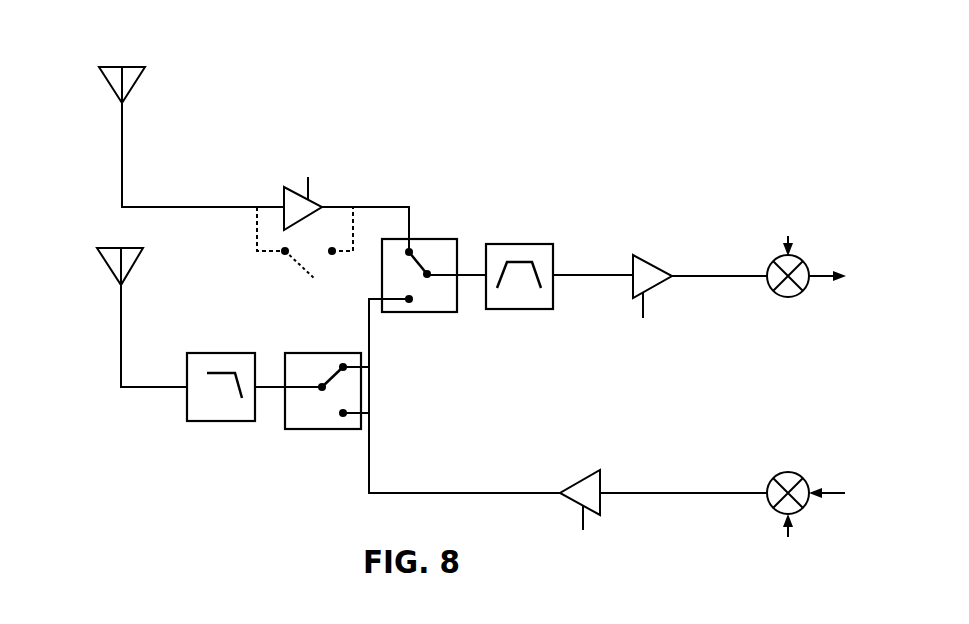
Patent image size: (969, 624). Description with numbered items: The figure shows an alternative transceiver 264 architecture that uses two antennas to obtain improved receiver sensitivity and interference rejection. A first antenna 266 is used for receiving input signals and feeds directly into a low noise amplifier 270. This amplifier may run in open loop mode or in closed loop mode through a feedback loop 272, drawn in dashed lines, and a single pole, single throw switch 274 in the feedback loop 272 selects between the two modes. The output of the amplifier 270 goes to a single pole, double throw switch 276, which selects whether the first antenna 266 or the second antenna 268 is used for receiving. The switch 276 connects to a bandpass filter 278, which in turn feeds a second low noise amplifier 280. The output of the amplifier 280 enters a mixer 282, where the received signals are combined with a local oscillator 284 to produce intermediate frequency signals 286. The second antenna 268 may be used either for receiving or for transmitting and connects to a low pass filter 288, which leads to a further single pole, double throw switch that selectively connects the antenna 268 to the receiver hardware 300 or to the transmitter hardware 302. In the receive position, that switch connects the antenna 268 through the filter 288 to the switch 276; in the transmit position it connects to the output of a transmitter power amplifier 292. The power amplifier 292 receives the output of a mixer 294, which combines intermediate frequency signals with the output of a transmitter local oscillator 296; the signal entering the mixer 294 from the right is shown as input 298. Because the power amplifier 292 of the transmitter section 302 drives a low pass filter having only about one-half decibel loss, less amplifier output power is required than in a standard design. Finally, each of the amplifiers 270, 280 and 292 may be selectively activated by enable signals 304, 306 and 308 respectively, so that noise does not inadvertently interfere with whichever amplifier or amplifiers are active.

The transceiver 264 is at (578, 161).
The first antenna 266 is at (134, 67).
The second antenna 268 is at (108, 248).
The low noise amplifier 270 is at (284, 206).
The feedback loop 272 is at (257, 232).
The single pole, single throw switch 274 is at (284, 256).
The single pole, double throw switch 276 is at (423, 238).
The bandpass filter 278 is at (518, 310).
The low noise amplifier 280 is at (652, 262).
The mixer 282 is at (775, 295).
The local oscillator 284 is at (796, 240).
The intermediate frequency signals 286 is at (830, 283).
The low pass filter 288 is at (213, 353).
The transmitter power amplifier 292 is at (597, 470).
The mixer 294 is at (768, 488).
The transmitter local oscillator 296 is at (786, 530).
The input 298 is at (836, 490).
The receiver hardware 300 is at (663, 207).
The transmitter hardware 302 is at (663, 450).
The enable signal 304 is at (309, 193).
The enable signal 306 is at (646, 300).
The enable signal 308 is at (586, 525).